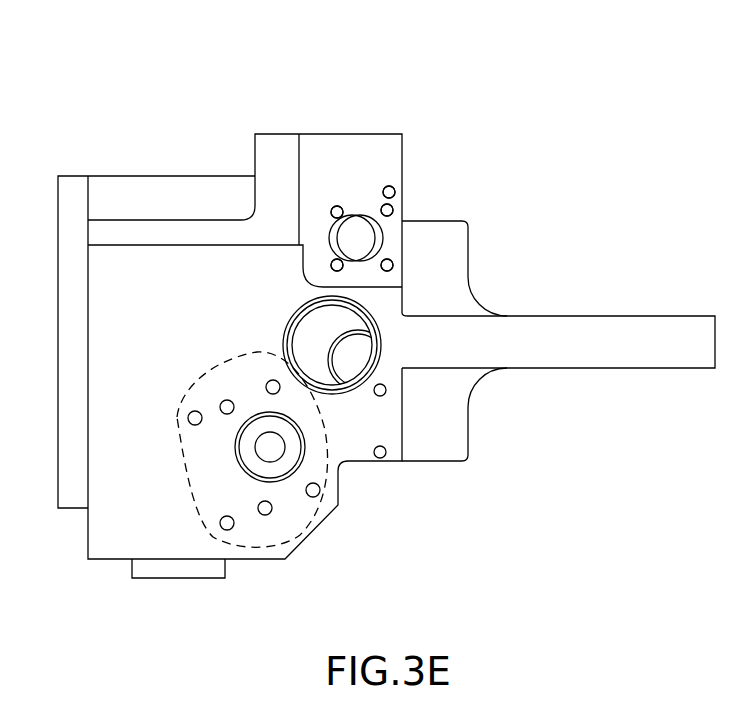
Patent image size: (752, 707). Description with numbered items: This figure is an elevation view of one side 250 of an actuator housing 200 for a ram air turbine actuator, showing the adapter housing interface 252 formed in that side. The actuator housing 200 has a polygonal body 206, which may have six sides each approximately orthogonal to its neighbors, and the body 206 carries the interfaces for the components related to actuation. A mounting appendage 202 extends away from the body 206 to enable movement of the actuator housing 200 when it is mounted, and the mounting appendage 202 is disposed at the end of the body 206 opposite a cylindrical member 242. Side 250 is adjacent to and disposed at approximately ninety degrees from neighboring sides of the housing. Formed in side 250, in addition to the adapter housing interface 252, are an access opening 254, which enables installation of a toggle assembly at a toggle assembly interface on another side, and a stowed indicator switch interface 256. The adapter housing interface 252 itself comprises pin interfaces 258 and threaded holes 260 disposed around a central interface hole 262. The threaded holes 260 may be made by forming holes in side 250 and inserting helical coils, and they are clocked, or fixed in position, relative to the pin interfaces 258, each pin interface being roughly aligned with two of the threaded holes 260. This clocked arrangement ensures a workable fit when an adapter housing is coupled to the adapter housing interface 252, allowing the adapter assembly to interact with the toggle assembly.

The actuator housing 200 is at (148, 120).
The mounting appendage 202 is at (625, 347).
The body 206 is at (348, 134).
The cylindrical member 242 is at (58, 222).
The side 250 is at (102, 550).
The adapter housing interface 252 is at (240, 553).
The access opening 254 is at (370, 313).
The stowed indicator switch interface 256 is at (368, 207).
The pin interfaces 258 is at (195, 425).
The threaded holes 260 is at (266, 383).
The interface hole 262 is at (293, 455).